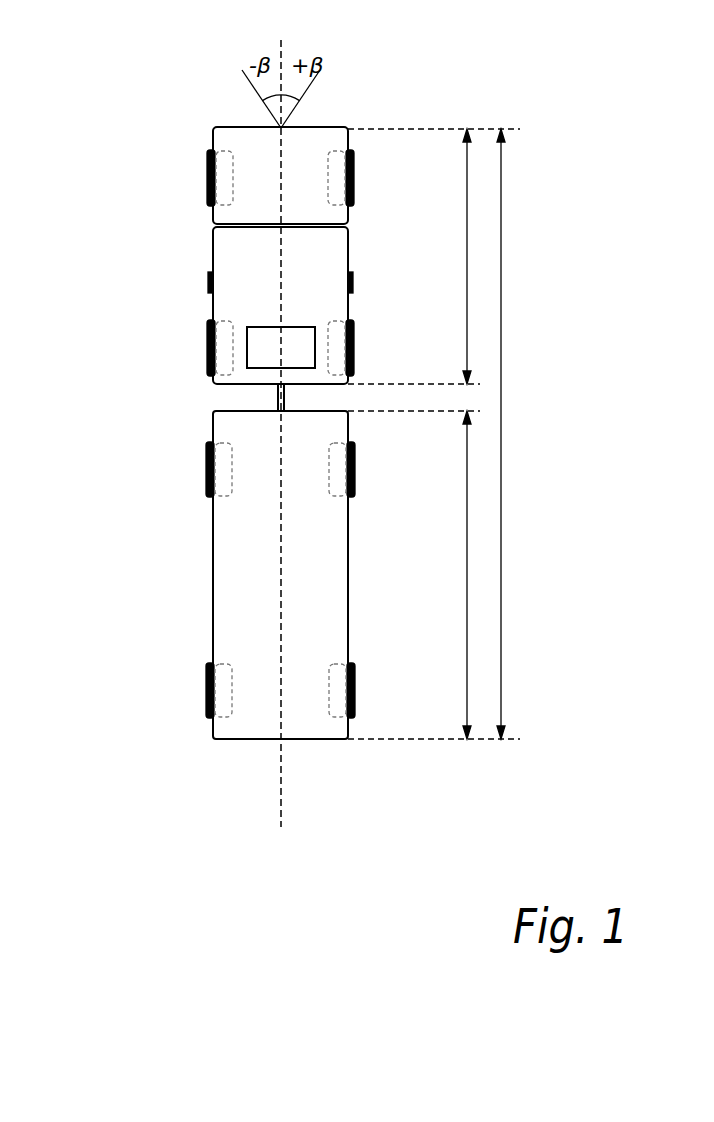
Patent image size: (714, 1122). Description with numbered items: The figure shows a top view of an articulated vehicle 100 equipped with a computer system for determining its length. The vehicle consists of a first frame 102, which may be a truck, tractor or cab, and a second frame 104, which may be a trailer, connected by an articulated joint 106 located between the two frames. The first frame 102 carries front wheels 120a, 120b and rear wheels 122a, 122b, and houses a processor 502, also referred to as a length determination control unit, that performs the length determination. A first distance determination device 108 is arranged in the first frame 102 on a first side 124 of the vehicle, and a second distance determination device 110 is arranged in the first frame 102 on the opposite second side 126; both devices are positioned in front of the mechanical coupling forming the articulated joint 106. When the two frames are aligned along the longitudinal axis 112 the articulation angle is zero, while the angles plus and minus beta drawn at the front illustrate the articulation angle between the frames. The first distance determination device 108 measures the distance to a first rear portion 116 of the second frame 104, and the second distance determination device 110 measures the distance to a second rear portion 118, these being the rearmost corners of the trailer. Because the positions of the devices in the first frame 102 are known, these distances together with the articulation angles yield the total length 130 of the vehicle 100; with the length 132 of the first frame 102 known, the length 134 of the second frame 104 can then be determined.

The articulated vehicle 100 is at (83, 44).
The first frame 102 is at (225, 127).
The second frame 104 is at (348, 580).
The articulated joint 106 is at (278, 395).
The first distance determination device 108 is at (208, 283).
The second distance determination device 110 is at (354, 283).
The longitudinal axis 112 is at (283, 805).
The first rear portion 116 is at (213, 739).
The second rear portion 118 is at (348, 740).
The front wheel 120a is at (208, 178).
The front wheel 120b is at (354, 178).
The rear wheel 122a is at (208, 348).
The rear wheel 122b is at (354, 348).
The first side 124 is at (213, 238).
The second side 126 is at (348, 238).
The total length 130 is at (501, 437).
The length of the first frame 132 is at (467, 255).
The length of the second frame 134 is at (467, 560).
The processor 502 is at (315, 350).